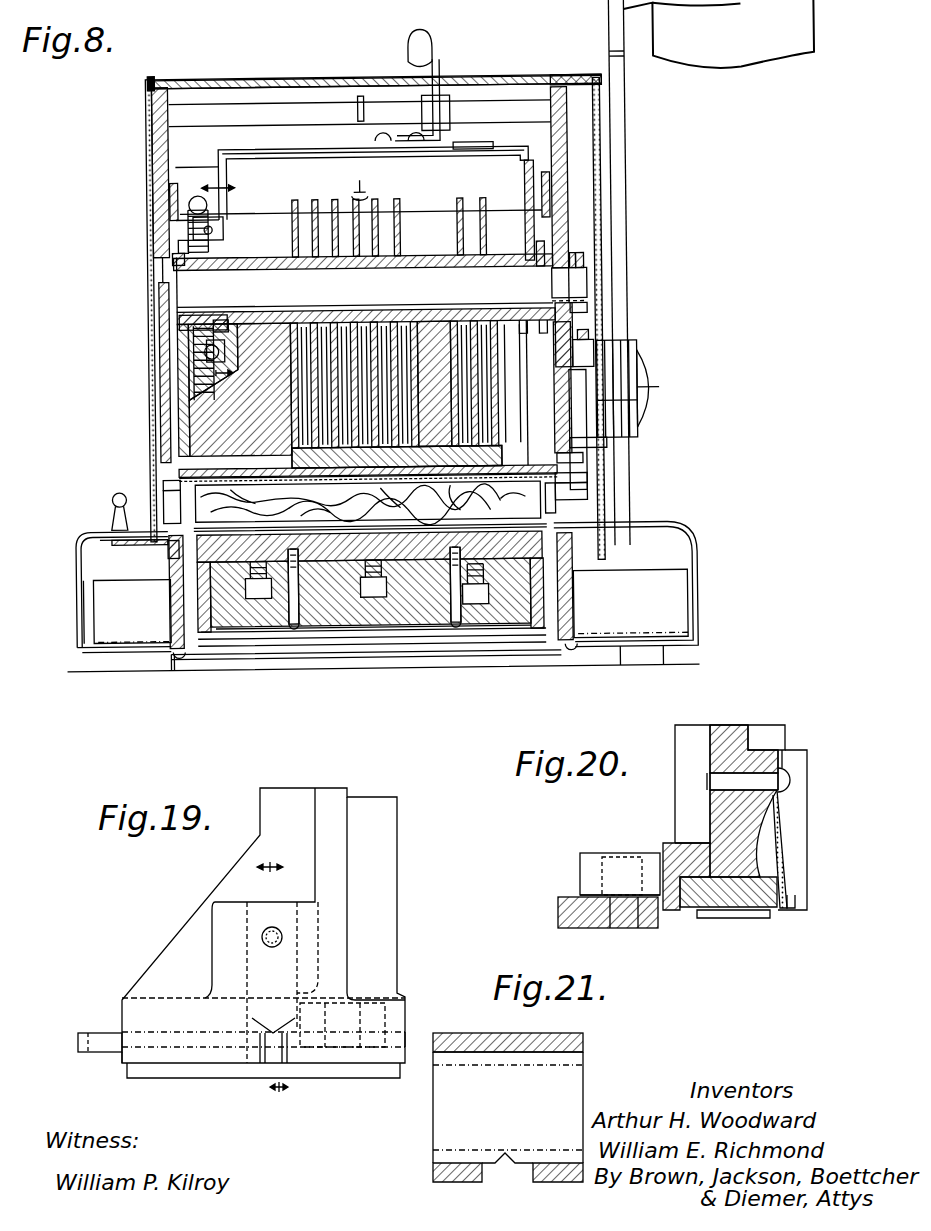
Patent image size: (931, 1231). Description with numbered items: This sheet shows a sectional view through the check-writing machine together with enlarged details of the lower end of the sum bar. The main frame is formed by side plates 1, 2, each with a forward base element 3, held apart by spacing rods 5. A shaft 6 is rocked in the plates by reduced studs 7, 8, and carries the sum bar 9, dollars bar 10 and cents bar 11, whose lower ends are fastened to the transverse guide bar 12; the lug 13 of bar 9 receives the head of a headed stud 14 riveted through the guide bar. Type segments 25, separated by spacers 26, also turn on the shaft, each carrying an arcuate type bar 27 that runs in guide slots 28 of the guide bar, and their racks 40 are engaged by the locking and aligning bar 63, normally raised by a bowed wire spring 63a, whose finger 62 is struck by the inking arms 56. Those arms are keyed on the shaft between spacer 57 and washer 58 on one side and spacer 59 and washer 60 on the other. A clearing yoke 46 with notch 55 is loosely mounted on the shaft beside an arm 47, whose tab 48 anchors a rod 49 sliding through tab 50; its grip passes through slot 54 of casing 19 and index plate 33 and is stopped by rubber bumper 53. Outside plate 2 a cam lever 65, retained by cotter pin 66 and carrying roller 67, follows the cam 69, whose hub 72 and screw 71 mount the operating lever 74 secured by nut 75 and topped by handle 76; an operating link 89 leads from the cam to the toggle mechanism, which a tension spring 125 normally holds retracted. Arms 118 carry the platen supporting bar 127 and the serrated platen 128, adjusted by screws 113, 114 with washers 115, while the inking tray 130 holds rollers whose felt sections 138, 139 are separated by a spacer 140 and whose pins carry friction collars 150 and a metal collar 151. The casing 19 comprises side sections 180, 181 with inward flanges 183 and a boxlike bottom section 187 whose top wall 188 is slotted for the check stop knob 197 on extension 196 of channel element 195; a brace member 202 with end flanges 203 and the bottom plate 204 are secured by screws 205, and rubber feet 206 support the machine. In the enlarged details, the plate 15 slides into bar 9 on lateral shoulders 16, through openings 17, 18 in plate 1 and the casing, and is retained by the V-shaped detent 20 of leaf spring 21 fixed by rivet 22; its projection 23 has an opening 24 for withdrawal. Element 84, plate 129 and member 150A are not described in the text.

In FIG. 8, the side plate 1 is at (160, 187).
In FIG. 8, the side plate 2 is at (565, 208).
In FIG. 8, the base element 3 is at (166, 601).
In FIG. 8, the spacing rods 5 is at (476, 104).
In FIG. 8, the shaft 6 is at (190, 292).
In FIG. 8, the reduced stud 7 is at (163, 283).
In FIG. 8, the reduced stud 8 is at (590, 282).
In FIG. 8, the sum bar 9 is at (264, 309).
In FIG. 19, the sum bar 9 is at (322, 805).
In FIG. 20, the sum bar 9 is at (724, 740).
In FIG. 8, the dollars bar 10 is at (428, 318).
In FIG. 8, the cents bar 11 is at (513, 318).
In FIG. 8, the guide bar 12 is at (536, 452).
In FIG. 20, the guide bar 12 is at (565, 897).
In FIG. 19, the lug 13 is at (388, 1012).
In FIG. 20, the lug 13 is at (590, 857).
In FIG. 20, the headed stud 14 is at (648, 928).
In FIG. 8, the plate 15 is at (178, 474).
In FIG. 19, the plate 15 is at (368, 1070).
In FIG. 20, the plate 15 is at (750, 900).
In FIG. 21, the plate 15 is at (440, 1113).
In FIG. 8, the lateral shoulders 16 is at (230, 285).
In FIG. 19, the lateral shoulders 16 is at (402, 1037).
In FIG. 20, the lateral shoulders 16 is at (672, 848).
In FIG. 21, the lateral shoulders 16 is at (467, 1050).
In FIG. 8, the opening 17 is at (182, 449).
In FIG. 8, the opening 18 is at (180, 470).
In FIG. 8, the casing 19 is at (149, 125).
In FIG. 21, the casing 19 is at (508, 1040).
In FIG. 19, the detent 20 is at (240, 1083).
In FIG. 20, the detent 20 is at (792, 885).
In FIG. 21, the detent 20 is at (505, 1163).
In FIG. 19, the leaf spring 21 is at (255, 960).
In FIG. 20, the leaf spring 21 is at (790, 830).
In FIG. 19, the rivet 22 is at (272, 927).
In FIG. 8, the projection 23 is at (174, 472).
In FIG. 19, the projection 23 is at (112, 1033).
In FIG. 19, the opening 24 is at (97, 1066).
In FIG. 8, the type segments 25 is at (299, 204).
In FIG. 8, the spacers 26 is at (294, 243).
In FIG. 8, the arcuate type bar 27 is at (470, 445).
In FIG. 20, the guide slots 28 is at (792, 778).
In FIG. 8, the index plate 33 is at (208, 78).
In FIG. 8, the racks 40 is at (336, 199).
In FIG. 8, the clearing yoke 46 is at (283, 150).
In FIG. 8, the arm 47 is at (219, 315).
In FIG. 8, the tab 48 is at (206, 353).
In FIG. 8, the rod 49 is at (207, 340).
In FIG. 8, the tab 50 is at (227, 216).
In FIG. 8, the rubber bumper 53 is at (424, 111).
In FIG. 8, the slot 54 is at (444, 71).
In FIG. 8, the notch 55 is at (482, 138).
In FIG. 8, the inking arms 56 is at (190, 230).
In FIG. 8, the spacer 57 is at (180, 246).
In FIG. 8, the washer 58 is at (437, 49).
In FIG. 8, the spacer 59 is at (553, 278).
In FIG. 8, the washer 60 is at (572, 262).
In FIG. 8, the finger 62 is at (172, 188).
In FIG. 8, the locking and aligning bar 63 is at (179, 163).
In FIG. 8, the bowed wire spring 63a is at (360, 108).
In FIG. 8, the cam lever 65 is at (588, 310).
In FIG. 8, the cotter pin 66 is at (585, 264).
In FIG. 8, the roller 67 is at (590, 337).
In FIG. 8, the cam 69 is at (606, 445).
In FIG. 8, the screw 71 is at (640, 378).
In FIG. 8, the hub 72 is at (615, 418).
In FIG. 8, the operating lever 74 is at (630, 99).
In FIG. 8, the nut 75 is at (640, 358).
In FIG. 8, the handle 76 is at (783, 60).
In FIG. 8, the lens 84 is at (648, 391).
In FIG. 8, the operating link 89 is at (582, 460).
In FIG. 8, the screws 113 is at (294, 630).
In FIG. 8, the screws 114 is at (255, 600).
In FIG. 8, the washers 115 is at (291, 626).
In FIG. 8, the arms 118 is at (200, 632).
In FIG. 8, the tension spring 125 is at (194, 364).
In FIG. 8, the platen supporting bar 127 is at (525, 628).
In FIG. 8, the platen 128 is at (546, 562).
In FIG. 8, the plate 129 is at (548, 541).
In FIG. 8, the tray 130 is at (574, 517).
In FIG. 8, the roller section 138 is at (373, 632).
In FIG. 8, the roller section 139 is at (162, 505).
In FIG. 8, the spacer 140 is at (195, 562).
In FIG. 8, the collar 150 is at (162, 490).
In FIG. 8, the member 150A is at (586, 494).
In FIG. 8, the metal collar 151 is at (586, 480).
In FIG. 8, the side section 180 is at (149, 145).
In FIG. 8, the side section 181 is at (603, 131).
In FIG. 8, the flange 183 is at (153, 78).
In FIG. 8, the bottom casing section 187 is at (696, 573).
In FIG. 8, the top wall 188 is at (286, 78).
In FIG. 8, the channel element 195 is at (166, 549).
In FIG. 8, the extension 196 is at (74, 550).
In FIG. 8, the knob 197 is at (111, 497).
In FIG. 8, the brace member 202 is at (396, 632).
In FIG. 8, the flange 203 is at (650, 583).
In FIG. 8, the bottom plate 204 is at (115, 633).
In FIG. 8, the screws 205 is at (174, 656).
In FIG. 8, the feet 206 is at (131, 660).